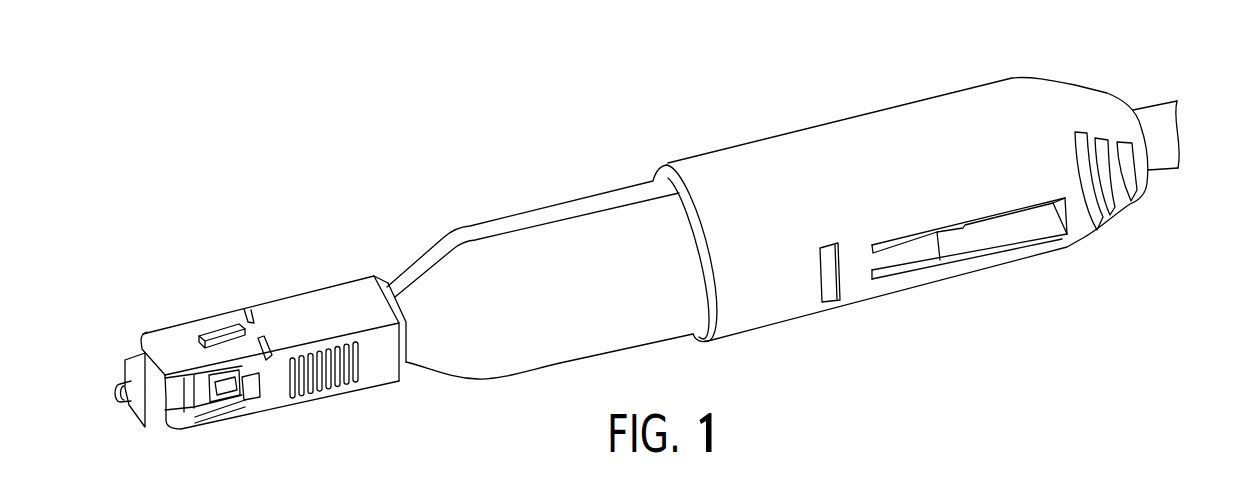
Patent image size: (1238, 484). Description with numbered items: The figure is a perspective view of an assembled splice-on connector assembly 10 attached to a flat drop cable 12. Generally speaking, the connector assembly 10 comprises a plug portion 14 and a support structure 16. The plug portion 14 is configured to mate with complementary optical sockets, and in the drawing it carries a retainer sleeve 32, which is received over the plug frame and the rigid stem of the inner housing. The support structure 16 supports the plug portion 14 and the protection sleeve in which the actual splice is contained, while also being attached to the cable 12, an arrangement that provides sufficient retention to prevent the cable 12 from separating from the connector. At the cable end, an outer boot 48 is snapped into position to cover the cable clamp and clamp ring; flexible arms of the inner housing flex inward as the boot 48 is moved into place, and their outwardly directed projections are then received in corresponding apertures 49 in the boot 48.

The splice-on connector assembly 10 is at (486, 179).
The flat drop cable 12 is at (1158, 162).
The plug portion 14 is at (217, 308).
The support structure 16 is at (752, 120).
The retainer sleeve 32 is at (377, 370).
The outer boot 48 is at (910, 118).
The apertures 49 is at (830, 281).